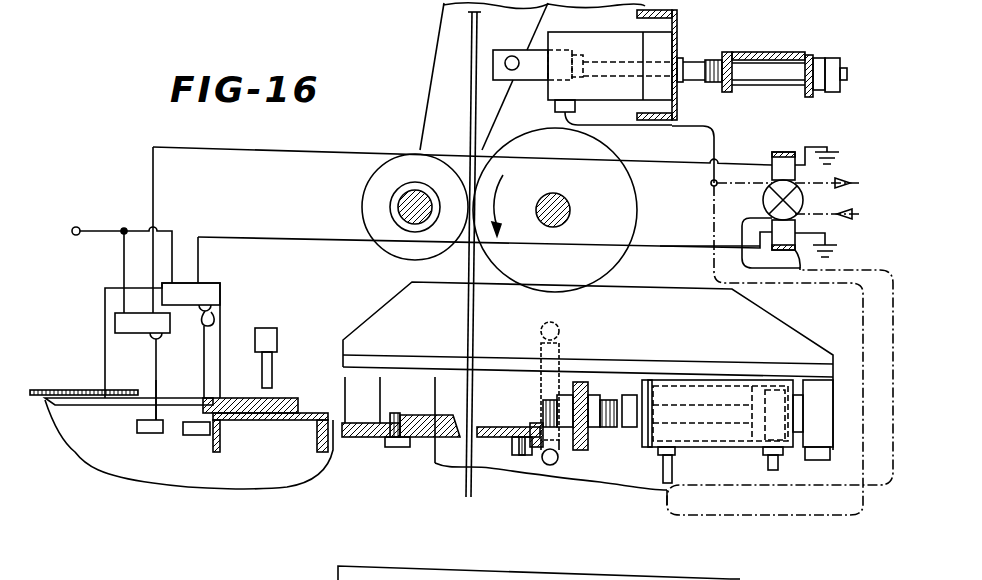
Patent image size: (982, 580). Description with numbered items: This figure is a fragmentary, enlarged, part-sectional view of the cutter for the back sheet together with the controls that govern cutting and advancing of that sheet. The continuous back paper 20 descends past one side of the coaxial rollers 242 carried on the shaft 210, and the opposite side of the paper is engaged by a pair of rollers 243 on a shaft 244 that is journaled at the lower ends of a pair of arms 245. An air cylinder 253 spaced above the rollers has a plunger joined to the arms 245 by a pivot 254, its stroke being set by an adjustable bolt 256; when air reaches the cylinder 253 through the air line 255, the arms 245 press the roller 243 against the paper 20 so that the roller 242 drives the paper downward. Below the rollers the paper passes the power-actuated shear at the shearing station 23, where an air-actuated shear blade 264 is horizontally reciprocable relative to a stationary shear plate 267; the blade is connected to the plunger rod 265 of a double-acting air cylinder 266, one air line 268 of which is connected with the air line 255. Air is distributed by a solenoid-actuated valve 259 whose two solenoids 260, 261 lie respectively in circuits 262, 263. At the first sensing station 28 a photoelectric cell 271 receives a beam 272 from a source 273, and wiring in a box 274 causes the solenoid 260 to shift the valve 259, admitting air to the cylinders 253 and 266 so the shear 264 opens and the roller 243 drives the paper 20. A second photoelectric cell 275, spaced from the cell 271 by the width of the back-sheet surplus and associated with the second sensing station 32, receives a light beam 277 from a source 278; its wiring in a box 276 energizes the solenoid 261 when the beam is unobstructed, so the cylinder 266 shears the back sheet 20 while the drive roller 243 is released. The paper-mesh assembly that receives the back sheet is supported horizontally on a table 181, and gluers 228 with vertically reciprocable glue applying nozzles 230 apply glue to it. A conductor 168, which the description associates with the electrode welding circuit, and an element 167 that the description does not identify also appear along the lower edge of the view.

The back paper 20 is at (470, 306).
The power-actuated shear 23 is at (477, 397).
The first sensing station 28 is at (116, 302).
The second sensing station 32 is at (217, 284).
The support 167 is at (758, 576).
The conductor 168 is at (607, 551).
The table 181 is at (112, 405).
The shaft 210 is at (566, 198).
The gluer 228 is at (280, 349).
The glue applying nozzle 230 is at (273, 378).
The rollers 242 is at (555, 210).
The rollers 243 is at (362, 192).
The shaft 244 is at (400, 205).
The arms 245 is at (440, 78).
The air cylinder 253 is at (636, 36).
The pivot 254 is at (512, 56).
The air line 255 is at (716, 134).
The adjustable bolt 256 is at (775, 78).
The solenoid-actuated valve 259 is at (812, 203).
The solenoid 260 is at (817, 188).
The solenoid 261 is at (787, 290).
The circuit 262 is at (690, 167).
The circuit 263 is at (688, 252).
The shear blade 264 is at (497, 450).
The plunger rod 265 is at (718, 403).
The air cylinder 266 is at (712, 446).
The stationary shear plate 267 is at (428, 430).
The air line 268 is at (820, 520).
The photoelectric cell 271 is at (155, 339).
The beam 272 is at (157, 385).
The source 273 is at (152, 434).
The box 274 is at (115, 322).
The photoelectric cell 275 is at (210, 320).
The box 276 is at (176, 284).
The light beam 277 is at (220, 405).
The source 278 is at (200, 436).